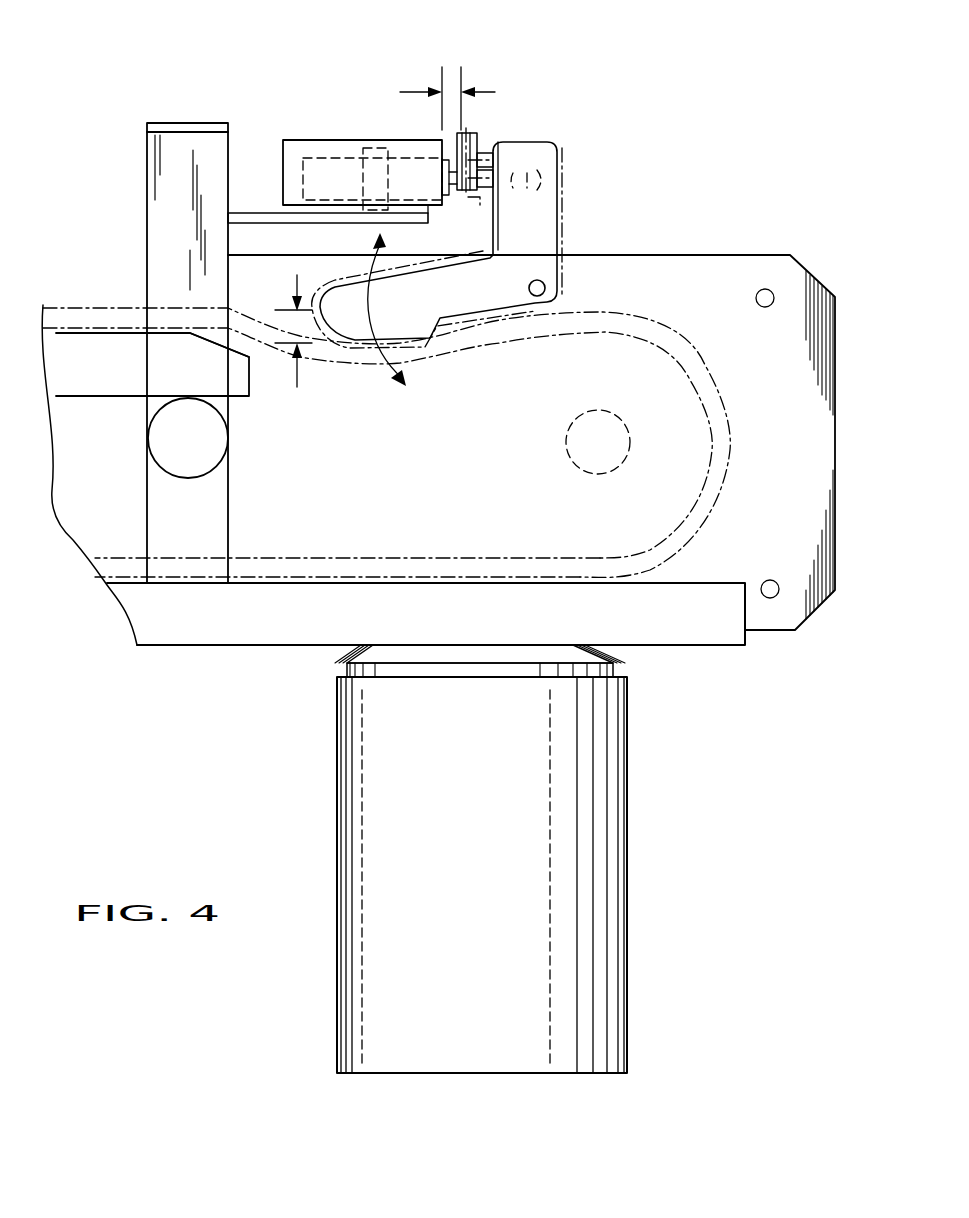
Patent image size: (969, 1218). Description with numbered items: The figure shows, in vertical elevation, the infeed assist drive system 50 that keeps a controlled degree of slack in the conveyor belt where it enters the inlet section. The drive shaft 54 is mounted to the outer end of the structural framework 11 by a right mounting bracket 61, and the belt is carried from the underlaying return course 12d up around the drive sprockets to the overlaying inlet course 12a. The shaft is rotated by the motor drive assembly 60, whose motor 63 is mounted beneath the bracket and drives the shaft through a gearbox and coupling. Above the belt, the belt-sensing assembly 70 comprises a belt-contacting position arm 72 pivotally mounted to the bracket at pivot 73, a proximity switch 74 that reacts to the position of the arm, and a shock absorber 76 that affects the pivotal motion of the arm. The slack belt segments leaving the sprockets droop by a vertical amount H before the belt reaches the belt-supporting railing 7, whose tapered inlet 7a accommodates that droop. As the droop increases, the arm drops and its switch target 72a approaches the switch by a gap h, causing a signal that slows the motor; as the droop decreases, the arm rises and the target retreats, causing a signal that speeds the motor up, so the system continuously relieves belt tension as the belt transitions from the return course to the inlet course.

The belt-supporting railing 7 is at (113, 398).
The tapered inlet 7a is at (213, 345).
The structural framework 11 is at (185, 644).
The inlet course 12a is at (90, 308).
The return course 12d is at (318, 550).
The infeed assist drive system 50 is at (687, 168).
The drive shaft 54 is at (608, 412).
The motor drive assembly 60 is at (459, 859).
The right mounting bracket 61 is at (836, 410).
The motor 63 is at (630, 790).
The belt-sensing assembly 70 is at (467, 209).
The belt-contacting position arm 72 is at (540, 213).
The switch target 72a is at (470, 135).
The pivot 73 is at (546, 285).
The proximity switch 74 is at (334, 143).
The shock absorber 76 is at (305, 175).
The droop H is at (281, 320).
The gap dimension h is at (450, 70).